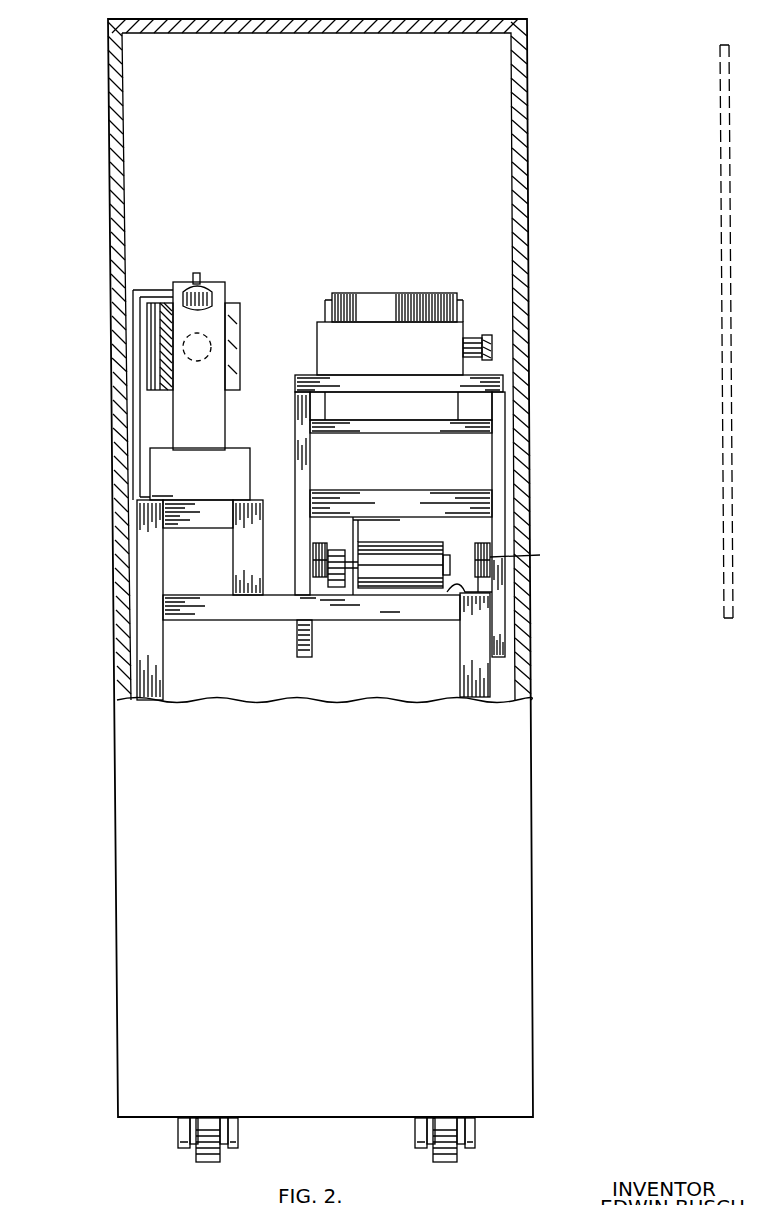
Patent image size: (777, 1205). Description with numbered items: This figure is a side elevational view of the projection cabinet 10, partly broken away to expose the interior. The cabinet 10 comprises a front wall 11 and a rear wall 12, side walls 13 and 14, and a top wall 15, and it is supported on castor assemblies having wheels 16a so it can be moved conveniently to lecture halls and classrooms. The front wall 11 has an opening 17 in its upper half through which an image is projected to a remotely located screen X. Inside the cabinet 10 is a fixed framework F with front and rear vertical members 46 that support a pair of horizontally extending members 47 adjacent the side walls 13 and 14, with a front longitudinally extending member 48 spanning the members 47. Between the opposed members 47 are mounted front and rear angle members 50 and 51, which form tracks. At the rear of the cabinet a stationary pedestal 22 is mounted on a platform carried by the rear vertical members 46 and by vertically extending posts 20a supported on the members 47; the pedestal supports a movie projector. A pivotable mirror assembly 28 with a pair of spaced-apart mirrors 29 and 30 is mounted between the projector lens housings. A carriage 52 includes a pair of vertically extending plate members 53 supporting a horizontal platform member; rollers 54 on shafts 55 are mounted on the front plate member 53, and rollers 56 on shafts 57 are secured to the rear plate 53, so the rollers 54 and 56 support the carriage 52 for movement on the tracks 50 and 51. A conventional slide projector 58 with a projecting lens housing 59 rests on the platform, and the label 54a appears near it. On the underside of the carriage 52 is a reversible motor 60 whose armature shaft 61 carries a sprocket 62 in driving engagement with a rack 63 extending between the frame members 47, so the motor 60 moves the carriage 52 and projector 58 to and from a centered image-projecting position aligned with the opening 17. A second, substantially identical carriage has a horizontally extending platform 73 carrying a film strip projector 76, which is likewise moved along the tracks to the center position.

The cabinet 10 is at (95, 878).
The front wall 11 is at (522, 677).
The rear wall 12 is at (120, 682).
The side wall 13 is at (335, 774).
The side wall 14 is at (360, 678).
The top wall 15 is at (334, 33).
The wheels 16a is at (206, 1162).
The opening 17 is at (518, 610).
The vertically extending posts 20a is at (237, 555).
The pedestal 22 is at (210, 482).
The pivotable mirror assembly 28 is at (245, 297).
The mirror 29 is at (151, 300).
The mirror 30 is at (240, 355).
The vertical members 46 is at (158, 641).
The horizontally extending members 47 is at (243, 610).
The front longitudinally extending member 48 is at (503, 627).
The front angle member 50 is at (460, 589).
The rear angle member 51 is at (318, 578).
The carriage 52 is at (508, 432).
The vertically extending plate members 53 is at (307, 450).
The rollers 54 is at (527, 555).
The wire lead 54a is at (389, 375).
The shafts 55 is at (480, 550).
The rollers 56 is at (327, 540).
The shafts 57 is at (315, 556).
The slide projector 58 is at (410, 349).
The projecting lens housing 59 is at (483, 335).
The motor 60 is at (423, 553).
The armature shaft 61 is at (342, 560).
The sprocket 62 is at (337, 583).
The rack 63 is at (322, 588).
The platform 73 is at (398, 420).
The film strip projector 76 is at (452, 300).
The screen X is at (722, 405).
The fixed framework F is at (443, 708).